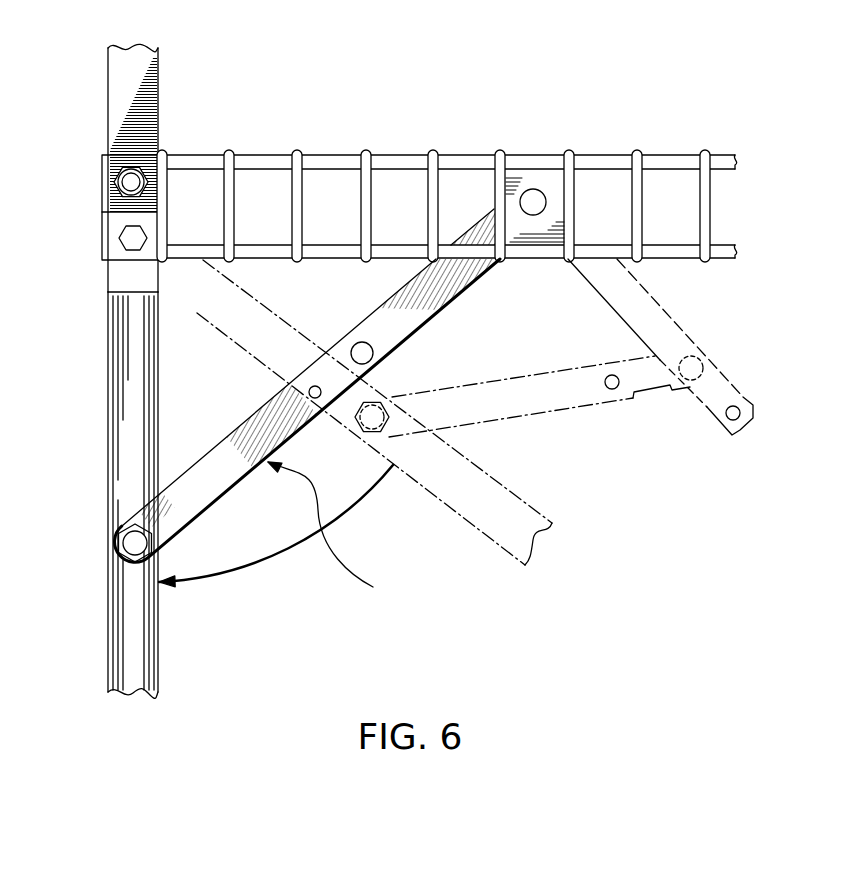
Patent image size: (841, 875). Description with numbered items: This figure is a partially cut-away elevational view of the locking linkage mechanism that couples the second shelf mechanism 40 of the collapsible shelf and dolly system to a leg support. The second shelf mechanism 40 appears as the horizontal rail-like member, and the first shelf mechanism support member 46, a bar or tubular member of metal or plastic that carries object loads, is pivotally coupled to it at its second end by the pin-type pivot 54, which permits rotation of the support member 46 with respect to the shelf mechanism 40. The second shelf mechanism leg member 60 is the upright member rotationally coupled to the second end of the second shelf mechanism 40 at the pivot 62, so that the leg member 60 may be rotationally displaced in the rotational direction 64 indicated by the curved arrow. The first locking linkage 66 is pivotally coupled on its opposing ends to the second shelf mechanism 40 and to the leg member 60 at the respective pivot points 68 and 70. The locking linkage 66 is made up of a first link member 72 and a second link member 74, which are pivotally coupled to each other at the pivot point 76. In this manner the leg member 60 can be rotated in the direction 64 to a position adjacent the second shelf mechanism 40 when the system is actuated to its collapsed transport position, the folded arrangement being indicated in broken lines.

The second shelf mechanism 40 is at (462, 150).
The first shelf mechanism support member 46 is at (158, 77).
The pivot 54 is at (131, 182).
The second shelf mechanism leg member 60 is at (108, 637).
The pivot 62 is at (125, 239).
The rotational direction 64 is at (257, 563).
The first locking linkage 66 is at (335, 533).
The pivot point 68 is at (533, 202).
The pivot point 70 is at (133, 543).
The first link member 72 is at (223, 444).
The second link member 74 is at (477, 283).
The pivot point 76 is at (363, 352).